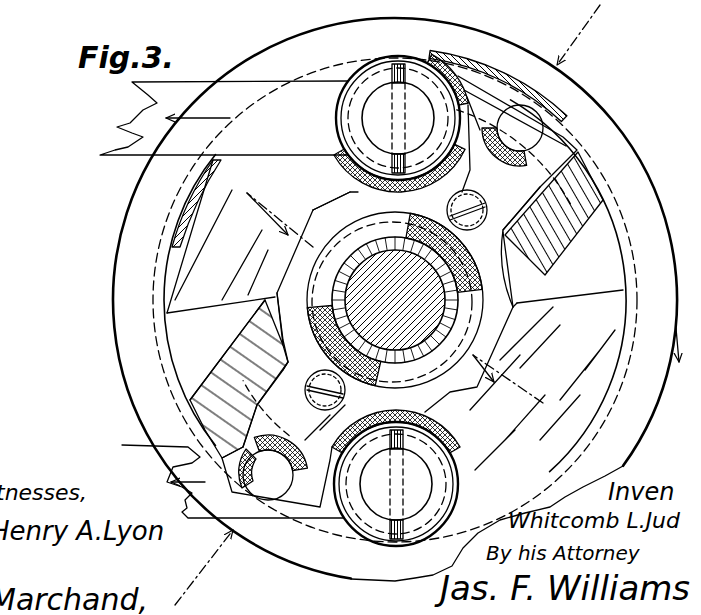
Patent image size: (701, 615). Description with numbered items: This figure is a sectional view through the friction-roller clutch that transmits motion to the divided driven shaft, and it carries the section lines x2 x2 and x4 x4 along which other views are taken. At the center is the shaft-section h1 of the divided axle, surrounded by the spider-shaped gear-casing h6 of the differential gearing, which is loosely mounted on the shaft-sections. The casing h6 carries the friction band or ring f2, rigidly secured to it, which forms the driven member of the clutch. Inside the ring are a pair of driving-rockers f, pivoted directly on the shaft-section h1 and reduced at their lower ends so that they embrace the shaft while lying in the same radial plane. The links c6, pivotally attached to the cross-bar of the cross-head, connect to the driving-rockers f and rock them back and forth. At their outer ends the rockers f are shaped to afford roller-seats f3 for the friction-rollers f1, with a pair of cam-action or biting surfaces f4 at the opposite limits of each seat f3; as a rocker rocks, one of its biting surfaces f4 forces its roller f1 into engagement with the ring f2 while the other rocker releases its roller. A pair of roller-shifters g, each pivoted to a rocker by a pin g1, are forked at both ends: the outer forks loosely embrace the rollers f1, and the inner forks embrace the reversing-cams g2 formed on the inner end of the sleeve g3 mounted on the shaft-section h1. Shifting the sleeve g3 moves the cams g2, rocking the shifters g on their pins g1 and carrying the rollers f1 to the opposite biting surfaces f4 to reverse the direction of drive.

The links c6 is at (147, 148).
The section line x2 x2 is at (387, 305).
The section line x4 x4 is at (243, 190).
The driving-rockers f is at (350, 190).
The friction-rollers f1 is at (545, 125).
The friction band or ring f2 is at (607, 145).
The roller-seats f3 is at (497, 152).
The cam-action or biting surfaces f4 is at (527, 160).
The roller-shifters g is at (505, 268).
The pin g1 is at (482, 205).
The reversing-cams g2 is at (330, 267).
The sleeve g3 is at (520, 303).
The shaft-section h1 is at (500, 228).
The gear-casing h6 is at (560, 245).